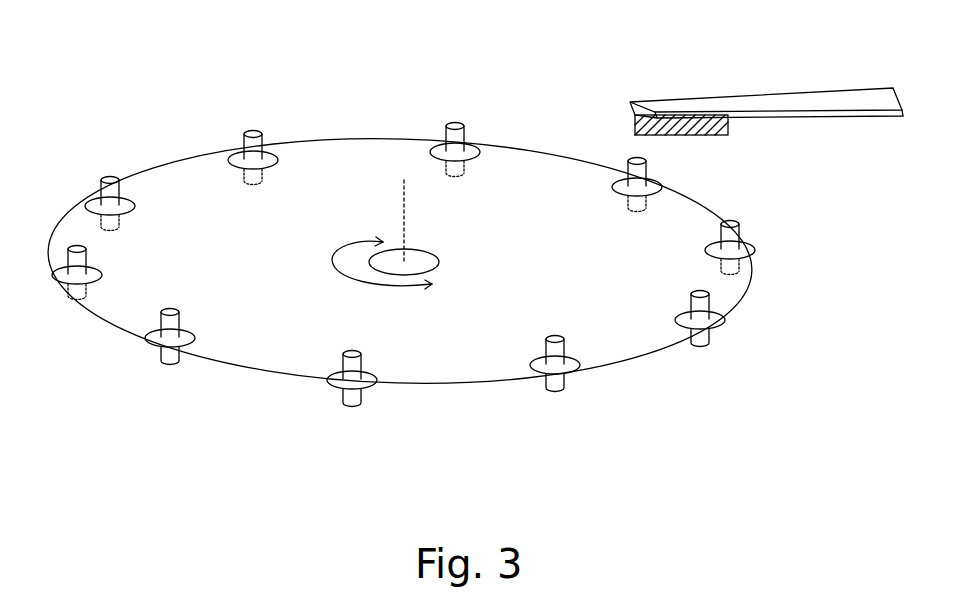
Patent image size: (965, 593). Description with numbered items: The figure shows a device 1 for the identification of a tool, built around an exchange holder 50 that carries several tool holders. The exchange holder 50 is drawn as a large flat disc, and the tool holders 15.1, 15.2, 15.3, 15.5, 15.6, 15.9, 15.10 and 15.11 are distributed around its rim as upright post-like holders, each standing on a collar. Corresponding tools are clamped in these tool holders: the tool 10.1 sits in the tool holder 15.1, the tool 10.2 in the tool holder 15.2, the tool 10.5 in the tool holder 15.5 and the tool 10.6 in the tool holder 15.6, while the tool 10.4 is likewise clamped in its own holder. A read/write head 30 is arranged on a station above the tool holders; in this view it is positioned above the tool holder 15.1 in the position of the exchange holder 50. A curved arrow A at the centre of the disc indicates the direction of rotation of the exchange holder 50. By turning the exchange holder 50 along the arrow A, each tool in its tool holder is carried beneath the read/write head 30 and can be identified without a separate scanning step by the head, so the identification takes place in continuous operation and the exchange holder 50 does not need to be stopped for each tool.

The device 1 is at (807, 235).
The exchange holder 50 is at (183, 188).
The arrow A is at (332, 260).
The read/write head 30 is at (700, 112).
The tool holder 15.1 is at (745, 228).
The tool holder 15.2 is at (718, 305).
The tool holder 15.3 is at (565, 372).
The tool holder 15.5 is at (372, 355).
The tool holder 15.6 is at (140, 330).
The tool holder 15.9 is at (250, 130).
The tool holder 15.10 is at (453, 123).
The tool holder 15.11 is at (637, 158).
The tool 10.1 is at (755, 270).
The tool 10.2 is at (713, 345).
The tool 10.4 is at (565, 392).
The tool 10.5 is at (357, 398).
The tool 10.6 is at (158, 362).